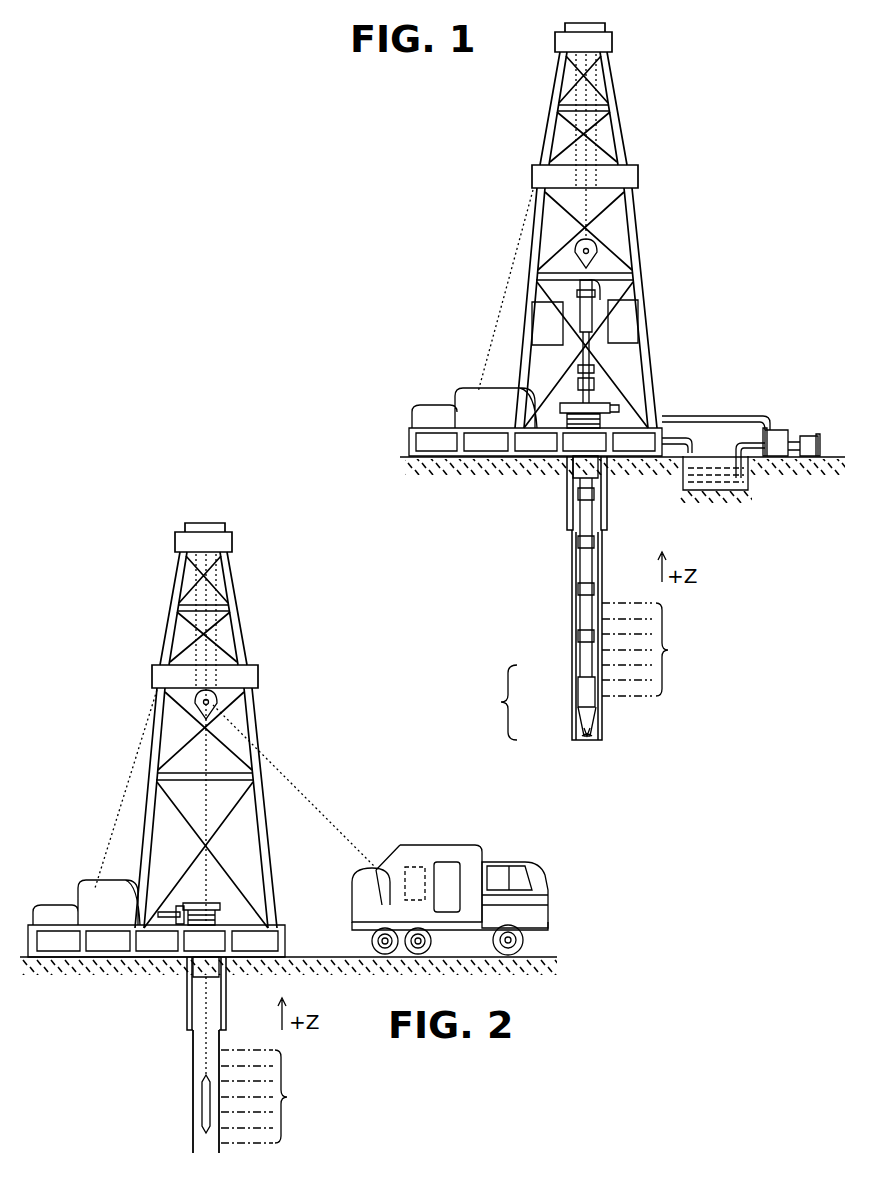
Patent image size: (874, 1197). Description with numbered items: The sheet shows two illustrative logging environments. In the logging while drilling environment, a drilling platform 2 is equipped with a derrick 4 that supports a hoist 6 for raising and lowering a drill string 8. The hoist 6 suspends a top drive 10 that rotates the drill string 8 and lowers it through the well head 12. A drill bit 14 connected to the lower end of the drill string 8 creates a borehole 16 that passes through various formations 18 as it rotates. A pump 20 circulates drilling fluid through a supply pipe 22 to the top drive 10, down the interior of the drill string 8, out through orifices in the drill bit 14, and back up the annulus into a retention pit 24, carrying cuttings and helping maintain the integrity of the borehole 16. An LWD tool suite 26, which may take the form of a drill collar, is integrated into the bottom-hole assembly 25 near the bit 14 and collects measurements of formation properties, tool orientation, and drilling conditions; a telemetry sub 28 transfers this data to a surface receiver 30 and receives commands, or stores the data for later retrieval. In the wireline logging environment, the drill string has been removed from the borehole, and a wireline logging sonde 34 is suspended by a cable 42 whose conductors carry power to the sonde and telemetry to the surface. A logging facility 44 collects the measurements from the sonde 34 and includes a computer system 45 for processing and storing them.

In FIG. 1, the drilling platform 2 is at (410, 432).
In FIG. 2, the drilling platform 2 is at (285, 937).
In FIG. 1, the derrick 4 is at (622, 151).
In FIG. 2, the derrick 4 is at (272, 903).
In FIG. 1, the hoist 6 is at (596, 250).
In FIG. 2, the hoist 6 is at (214, 702).
In FIG. 1, the drill string 8 is at (590, 575).
In FIG. 1, the top drive 10 is at (586, 310).
In FIG. 1, the well head 12 is at (607, 400).
In FIG. 2, the well head 12 is at (218, 903).
In FIG. 1, the drill bit 14 is at (595, 734).
In FIG. 1, the borehole 16 is at (599, 577).
In FIG. 1, the formations 18 is at (651, 649).
In FIG. 2, the formations 18 is at (271, 1096).
In FIG. 1, the pump 20 is at (776, 431).
In FIG. 1, the supply pipe 22 is at (723, 417).
In FIG. 1, the retention pit 24 is at (697, 480).
In FIG. 1, the bottom-hole assembly 25 is at (489, 702).
In FIG. 1, the LWD tool suite 26 is at (578, 708).
In FIG. 1, the telemetry sub 28 is at (579, 692).
In FIG. 1, the surface receiver 30 is at (591, 370).
In FIG. 2, the wireline logging sonde 34 is at (204, 1095).
In FIG. 2, the cable 42 is at (272, 775).
In FIG. 2, the logging facility 44 is at (473, 847).
In FIG. 2, the computer system 45 is at (411, 866).